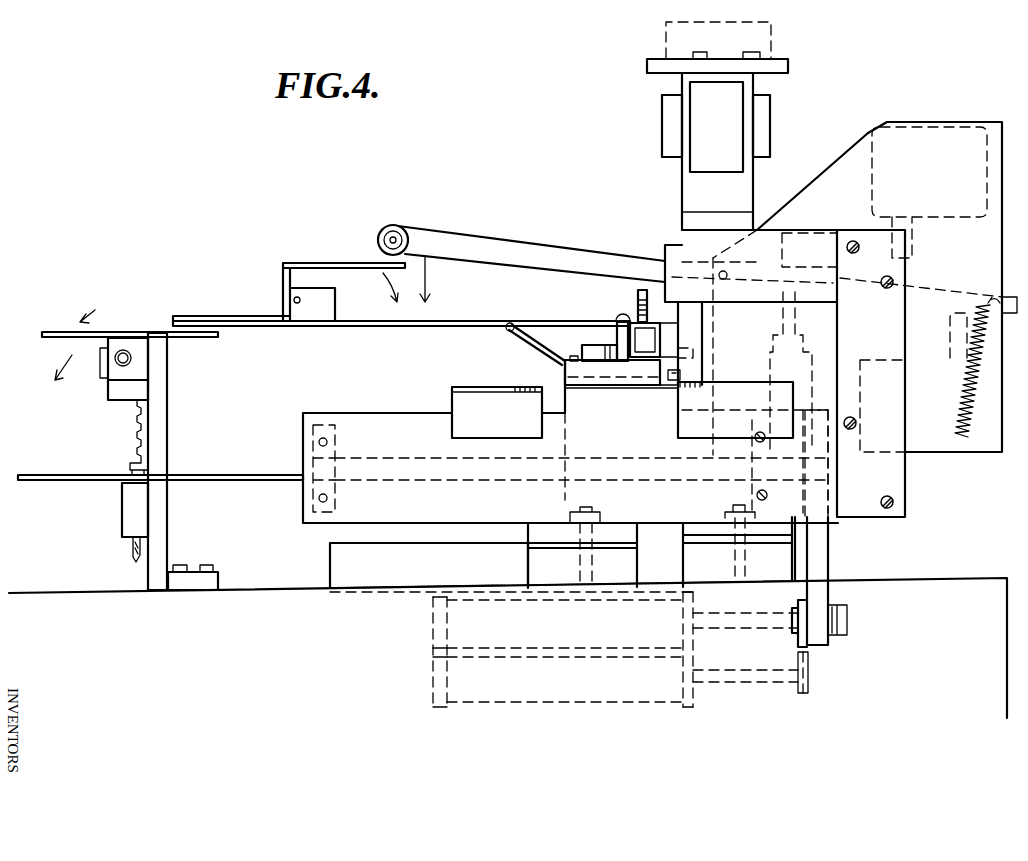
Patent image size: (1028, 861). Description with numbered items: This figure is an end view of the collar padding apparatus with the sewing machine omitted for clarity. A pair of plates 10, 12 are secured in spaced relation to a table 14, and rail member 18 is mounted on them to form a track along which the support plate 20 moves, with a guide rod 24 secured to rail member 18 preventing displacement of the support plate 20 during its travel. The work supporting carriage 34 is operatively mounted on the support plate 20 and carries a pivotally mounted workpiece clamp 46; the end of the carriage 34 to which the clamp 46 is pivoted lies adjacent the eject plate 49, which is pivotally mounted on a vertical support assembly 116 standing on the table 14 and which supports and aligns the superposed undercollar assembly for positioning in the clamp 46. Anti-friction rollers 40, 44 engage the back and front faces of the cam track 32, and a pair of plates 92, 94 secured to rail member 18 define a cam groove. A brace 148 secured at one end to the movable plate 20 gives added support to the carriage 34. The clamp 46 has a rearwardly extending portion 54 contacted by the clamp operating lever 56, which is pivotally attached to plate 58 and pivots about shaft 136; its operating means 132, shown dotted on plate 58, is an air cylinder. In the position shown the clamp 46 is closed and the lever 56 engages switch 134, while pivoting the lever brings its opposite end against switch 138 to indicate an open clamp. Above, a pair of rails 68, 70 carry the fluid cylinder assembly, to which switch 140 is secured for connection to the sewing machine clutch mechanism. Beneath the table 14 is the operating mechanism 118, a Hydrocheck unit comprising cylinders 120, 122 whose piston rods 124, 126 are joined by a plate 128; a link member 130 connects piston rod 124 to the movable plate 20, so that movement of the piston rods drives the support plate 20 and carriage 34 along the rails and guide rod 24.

The plate 10 is at (530, 533).
The plate 12 is at (684, 531).
The table 14 is at (68, 592).
The rail member 18 is at (414, 513).
The support plate 20 is at (563, 368).
The rod 24 is at (401, 472).
The cam track 32 is at (616, 326).
The work supporting carriage 34 is at (443, 318).
The anti-friction roller 40 is at (690, 350).
The anti-friction roller 44 is at (584, 352).
The workpiece clamp 46 is at (232, 317).
The eject plate 49 is at (72, 330).
The rearwardly extending portion 54 is at (350, 264).
The clamp operating lever 56 is at (548, 262).
The plate 58 is at (851, 154).
The rail 68 is at (758, 130).
The rail 70 is at (668, 127).
The plate 92 is at (470, 384).
The plate 94 is at (722, 386).
The vertical support assembly 116 is at (161, 405).
The operating mechanism 118 is at (433, 645).
The cylinder 120 is at (560, 640).
The cylinder 122 is at (600, 694).
The piston rod 124 is at (743, 622).
The piston rod 126 is at (735, 678).
The plate 128 is at (807, 657).
The link member 130 is at (820, 560).
The operating means 132 is at (798, 368).
The switch 134 is at (912, 375).
The shaft 136 is at (726, 272).
The switch 138 is at (950, 208).
The switch 140 is at (672, 33).
The brace 148 is at (520, 345).